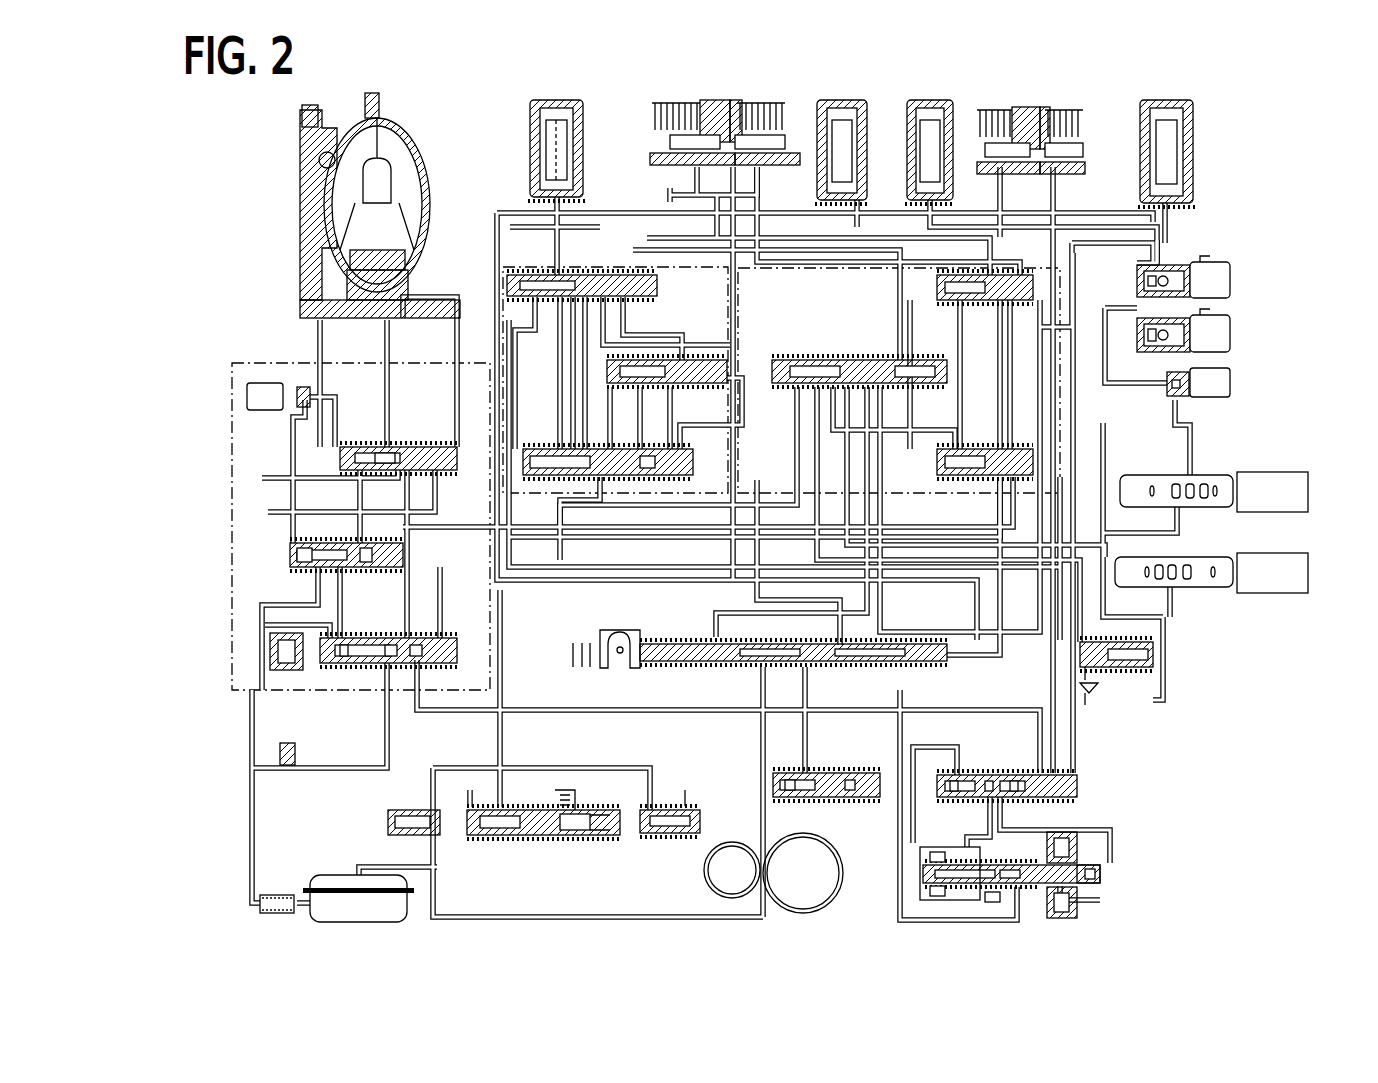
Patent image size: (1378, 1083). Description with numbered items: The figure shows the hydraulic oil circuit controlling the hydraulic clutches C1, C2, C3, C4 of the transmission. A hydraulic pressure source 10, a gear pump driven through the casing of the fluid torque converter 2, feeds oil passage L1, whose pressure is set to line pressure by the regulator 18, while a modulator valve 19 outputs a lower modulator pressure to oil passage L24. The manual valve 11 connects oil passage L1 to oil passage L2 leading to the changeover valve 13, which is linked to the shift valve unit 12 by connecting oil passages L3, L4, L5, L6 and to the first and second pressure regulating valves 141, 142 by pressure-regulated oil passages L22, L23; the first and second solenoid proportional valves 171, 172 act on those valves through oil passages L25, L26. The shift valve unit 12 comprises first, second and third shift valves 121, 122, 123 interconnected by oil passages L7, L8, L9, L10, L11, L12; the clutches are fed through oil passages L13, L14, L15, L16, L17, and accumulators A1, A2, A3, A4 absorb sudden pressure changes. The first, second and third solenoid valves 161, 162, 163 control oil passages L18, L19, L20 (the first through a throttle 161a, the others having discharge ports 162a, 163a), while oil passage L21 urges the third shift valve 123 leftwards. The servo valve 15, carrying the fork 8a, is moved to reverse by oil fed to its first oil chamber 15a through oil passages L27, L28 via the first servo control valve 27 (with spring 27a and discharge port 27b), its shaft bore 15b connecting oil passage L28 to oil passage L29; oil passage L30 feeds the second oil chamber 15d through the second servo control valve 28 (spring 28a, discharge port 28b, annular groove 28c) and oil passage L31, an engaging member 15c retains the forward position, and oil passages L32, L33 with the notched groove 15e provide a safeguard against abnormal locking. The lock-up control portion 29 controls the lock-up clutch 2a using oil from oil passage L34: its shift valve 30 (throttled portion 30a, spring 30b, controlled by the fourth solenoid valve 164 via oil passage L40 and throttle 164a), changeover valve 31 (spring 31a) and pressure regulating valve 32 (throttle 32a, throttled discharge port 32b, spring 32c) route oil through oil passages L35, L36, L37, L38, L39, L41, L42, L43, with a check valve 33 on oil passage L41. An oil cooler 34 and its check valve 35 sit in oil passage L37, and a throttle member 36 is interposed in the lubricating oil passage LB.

The fluid torque converter 2 is at (419, 137).
The lock-up clutch 2a is at (320, 212).
The accumulator A1 is at (535, 130).
The accumulator A2 is at (865, 135).
The accumulator A3 is at (910, 180).
The accumulator A4 is at (1195, 152).
The first speed hydraulic clutch C1 is at (655, 122).
The second speed hydraulic clutch C2 is at (770, 150).
The third speed hydraulic clutch C3 is at (988, 150).
The fourth speed hydraulic clutch C4 is at (1080, 130).
The fork 8a is at (1060, 862).
The hydraulic pressure source 10 is at (699, 890).
The manual valve 11 is at (908, 630).
The shift valve unit 12 is at (505, 268).
The first shift valve 121 is at (633, 492).
The second shift valve 122 is at (670, 291).
The third shift valve 123 is at (714, 348).
The changeover valve 13 is at (849, 348).
The first pressure regulating valve 141 is at (1009, 489).
The second pressure regulating valve 142 is at (1048, 292).
The servo valve 15 is at (1110, 841).
The first oil chamber 15a is at (930, 880).
The shaft bore 15b is at (992, 897).
The engaging member 15c is at (1090, 882).
The second oil chamber 15d is at (930, 895).
The notched groove 15e is at (935, 860).
The first solenoid valve 161 is at (1230, 382).
The throttle 161a is at (1185, 400).
The second solenoid valve 162 is at (1210, 270).
The oil discharge port 162a is at (1190, 295).
The third solenoid valve 163 is at (1215, 325).
The oil discharge port 163a is at (1170, 350).
The fourth solenoid valve 164 is at (247, 395).
The throttle 164a is at (350, 392).
The first solenoid proportional valve 171 is at (1308, 573).
The second solenoid proportional valve 172 is at (1308, 492).
The regulator 18 is at (556, 853).
The modulator valve 19 is at (1167, 657).
The first servo control valve 27 is at (768, 791).
The spring 27a is at (778, 798).
The oil discharge port 27b is at (800, 770).
The second servo control valve 28 is at (999, 764).
The spring 28a is at (958, 798).
The oil discharge port 28b is at (1000, 790).
The annular groove 28c is at (1020, 770).
The lock-up control portion 29 is at (240, 695).
The shift valve 30 is at (418, 572).
The throttled portion 30a is at (360, 545).
The spring 30b is at (290, 548).
The changeover valve 31 is at (407, 438).
The spring 31a is at (380, 445).
The pressure regulating valve 32 is at (375, 678).
The throttle 32a is at (390, 668).
The throttled oil discharge port 32b is at (410, 667).
The spring 32c is at (338, 667).
The check valve 33 is at (270, 650).
The oil cooler 34 is at (283, 895).
The check valve 35 is at (288, 768).
The throttle member 36 is at (670, 835).
The oil passage L1 is at (763, 688).
The oil passage L2 is at (1000, 390).
The oil passage L3 is at (797, 505).
The oil passage L4 is at (847, 537).
The oil passage L5 is at (747, 268).
The oil passage L6 is at (960, 250).
The oil passage L7 is at (520, 300).
The oil passage L8 is at (560, 370).
The oil passage L9 is at (573, 400).
The oil passage L10 is at (585, 425).
The oil passage L11 is at (693, 462).
The oil passage L12 is at (623, 330).
The oil passage L13 is at (497, 240).
The oil passage L14 is at (735, 322).
The oil passage L15 is at (930, 226).
The oil passage L16 is at (1040, 308).
The oil passage L17 is at (757, 553).
The oil passage L18 is at (1105, 450).
The oil passage L19 is at (1160, 247).
The oil passage L20 is at (1140, 410).
The oil passage L21 is at (742, 415).
The oil passage L22 is at (930, 462).
The oil passage L23 is at (900, 285).
The oil passage L24 is at (533, 527).
The oil passage L25 is at (1163, 640).
The oil passage L26 is at (1190, 450).
The oil passage L27 is at (805, 730).
The oil passage L28 is at (920, 772).
The oil passage L29 is at (1075, 905).
The oil passage L30 is at (700, 712).
The oil passage L31 is at (1050, 830).
The oil passage L32 is at (585, 567).
The oil passage L33 is at (985, 840).
The oil passage L34 is at (502, 660).
The oil passage L35 is at (318, 345).
The oil passage L36 is at (465, 300).
The oil passage L37 is at (252, 765).
The oil passage L38 is at (268, 478).
The oil passage L39 is at (275, 598).
The oil passage L40 is at (295, 455).
The oil passage L41 is at (387, 345).
The oil passage L42 is at (268, 512).
The oil passage L43 is at (817, 460).
The lubricating oil passage LB is at (548, 768).